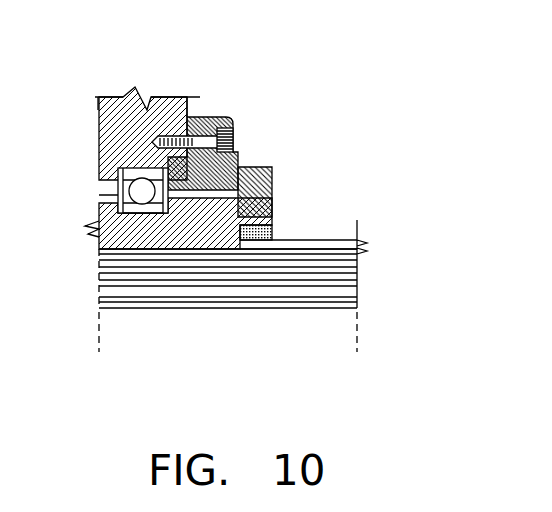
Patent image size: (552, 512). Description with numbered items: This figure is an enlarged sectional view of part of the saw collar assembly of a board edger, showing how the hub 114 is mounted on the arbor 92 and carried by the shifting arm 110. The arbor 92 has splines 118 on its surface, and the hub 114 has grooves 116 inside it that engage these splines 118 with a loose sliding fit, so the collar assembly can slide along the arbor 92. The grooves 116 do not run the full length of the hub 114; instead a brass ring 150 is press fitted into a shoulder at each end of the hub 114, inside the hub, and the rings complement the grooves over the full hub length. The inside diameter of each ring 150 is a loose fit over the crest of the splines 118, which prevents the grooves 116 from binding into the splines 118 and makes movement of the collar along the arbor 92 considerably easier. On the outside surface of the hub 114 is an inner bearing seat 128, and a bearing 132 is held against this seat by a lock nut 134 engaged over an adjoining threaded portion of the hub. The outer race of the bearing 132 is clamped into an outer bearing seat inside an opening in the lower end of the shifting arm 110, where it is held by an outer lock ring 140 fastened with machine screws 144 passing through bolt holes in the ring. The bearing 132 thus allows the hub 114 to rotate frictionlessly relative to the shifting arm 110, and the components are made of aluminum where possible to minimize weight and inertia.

The arbor 92 is at (306, 240).
The shifting arm 110 is at (99, 107).
The hub 114 is at (99, 236).
The grooves 116 is at (192, 249).
The splines 118 is at (308, 297).
The inner bearing seat 128 is at (143, 214).
The bearing 132 is at (118, 192).
The lock nut 134 is at (262, 166).
The outer lock ring 140 is at (210, 117).
The machine screws 144 is at (238, 162).
The brass ring 150 is at (273, 230).